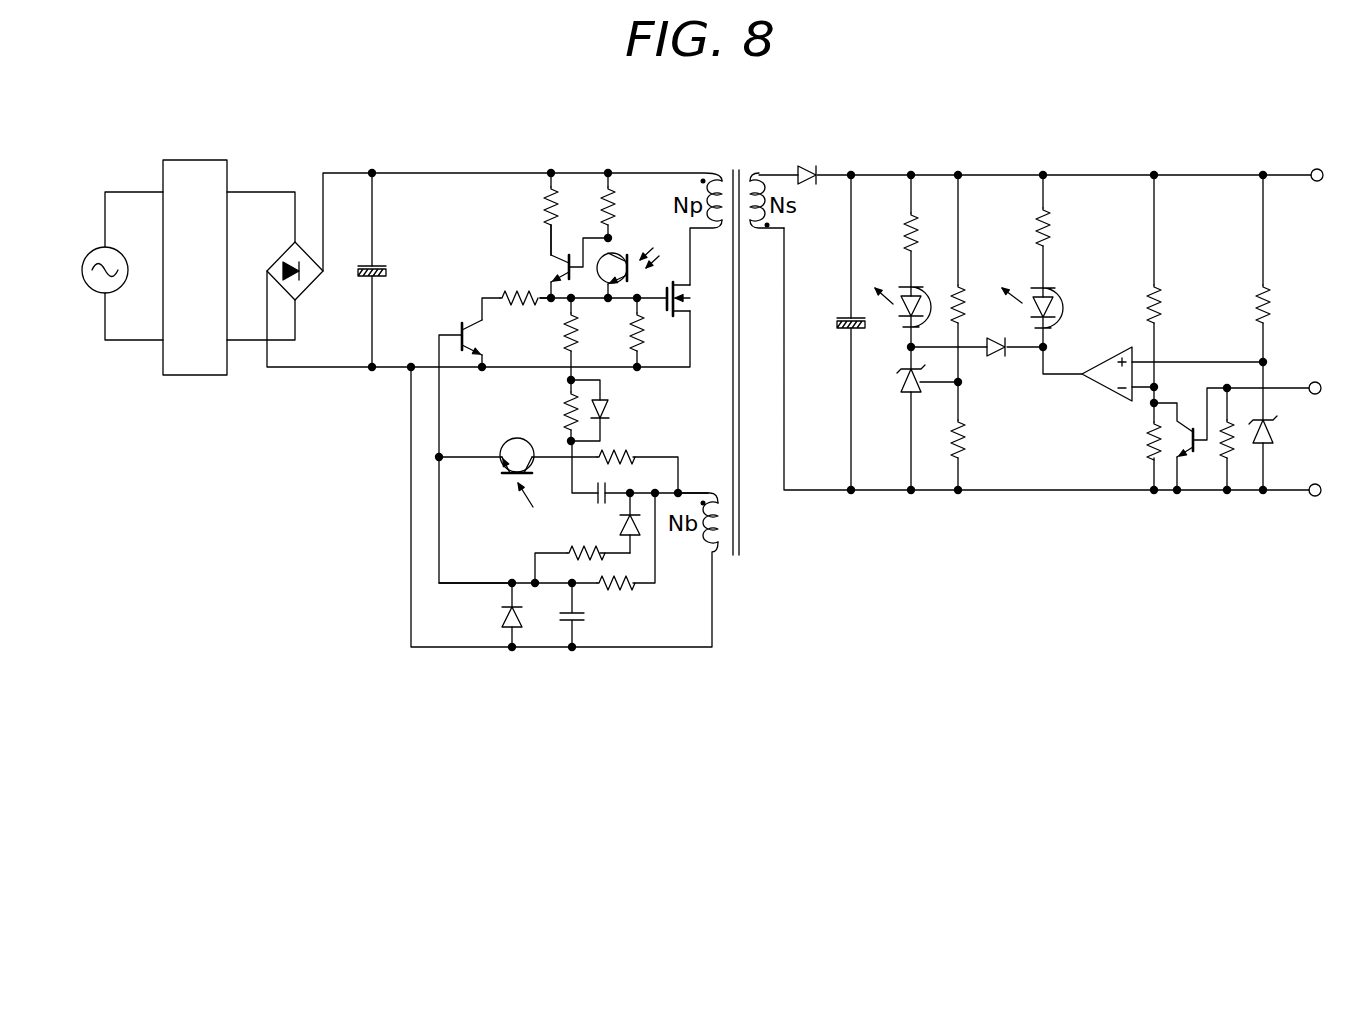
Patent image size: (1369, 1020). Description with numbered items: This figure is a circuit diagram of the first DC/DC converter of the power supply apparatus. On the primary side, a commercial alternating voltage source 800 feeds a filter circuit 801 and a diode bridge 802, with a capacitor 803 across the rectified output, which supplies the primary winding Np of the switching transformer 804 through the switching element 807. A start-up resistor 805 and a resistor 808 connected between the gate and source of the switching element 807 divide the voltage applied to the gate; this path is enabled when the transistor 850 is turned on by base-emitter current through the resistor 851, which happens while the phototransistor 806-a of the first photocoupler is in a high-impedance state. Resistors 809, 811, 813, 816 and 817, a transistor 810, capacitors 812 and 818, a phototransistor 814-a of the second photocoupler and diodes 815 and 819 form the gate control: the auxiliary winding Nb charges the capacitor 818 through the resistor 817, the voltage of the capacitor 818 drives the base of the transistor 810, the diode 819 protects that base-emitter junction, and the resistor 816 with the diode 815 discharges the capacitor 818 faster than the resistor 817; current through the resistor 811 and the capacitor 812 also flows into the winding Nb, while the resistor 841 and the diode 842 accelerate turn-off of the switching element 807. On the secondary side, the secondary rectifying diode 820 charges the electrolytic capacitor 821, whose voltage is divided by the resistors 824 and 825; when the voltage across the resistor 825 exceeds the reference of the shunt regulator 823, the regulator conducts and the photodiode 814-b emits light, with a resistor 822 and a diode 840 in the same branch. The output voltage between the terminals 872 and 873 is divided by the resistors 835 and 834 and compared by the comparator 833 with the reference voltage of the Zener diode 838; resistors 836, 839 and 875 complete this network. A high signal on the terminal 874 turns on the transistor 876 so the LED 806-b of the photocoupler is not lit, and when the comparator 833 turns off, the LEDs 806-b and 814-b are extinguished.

The commercial alternating voltage source 800 is at (94, 250).
The filter circuit 801 is at (195, 160).
The diode bridge 802 is at (309, 287).
The capacitor 803 is at (382, 264).
The switching transformer 804 is at (738, 165).
The start-up resistor 805 is at (545, 195).
The phototransistor 806-a is at (626, 253).
The LED 806-b is at (1064, 296).
The switching element 807 is at (689, 292).
The resistor 808 is at (644, 330).
The resistor 809 is at (508, 292).
The transistor 810 is at (456, 324).
The resistor 811 is at (560, 334).
The capacitor 812 is at (593, 503).
The resistor 813 is at (627, 437).
The phototransistor 814-a is at (505, 446).
The photodiode 814-b is at (889, 283).
The diode 815 is at (640, 536).
The resistor 816 is at (565, 553).
The resistor 817 is at (617, 593).
The capacitor 818 is at (592, 618).
The diode 819 is at (505, 617).
The secondary rectifying diode 820 is at (805, 168).
The electrolytic capacitor 821 is at (843, 333).
The resistor 822 is at (918, 225).
The shunt regulator 823 is at (906, 392).
The resistor 824 is at (965, 293).
The resistor 825 is at (967, 445).
The comparator 833 is at (1120, 354).
The resistor 834 is at (1146, 445).
The resistor 835 is at (1165, 301).
The resistor 836 is at (1275, 301).
The Zener diode 838 is at (1275, 436).
The resistor 839 is at (1235, 460).
The diode 840 is at (996, 357).
The resistor 841 is at (565, 410).
The diode 842 is at (612, 406).
The transistor 850 is at (553, 265).
The resistor 851 is at (602, 195).
The terminal 872 is at (1317, 183).
The terminal 873 is at (1315, 497).
The terminal 874 is at (1316, 382).
The resistor 875 is at (1057, 223).
The transistor 876 is at (1202, 460).